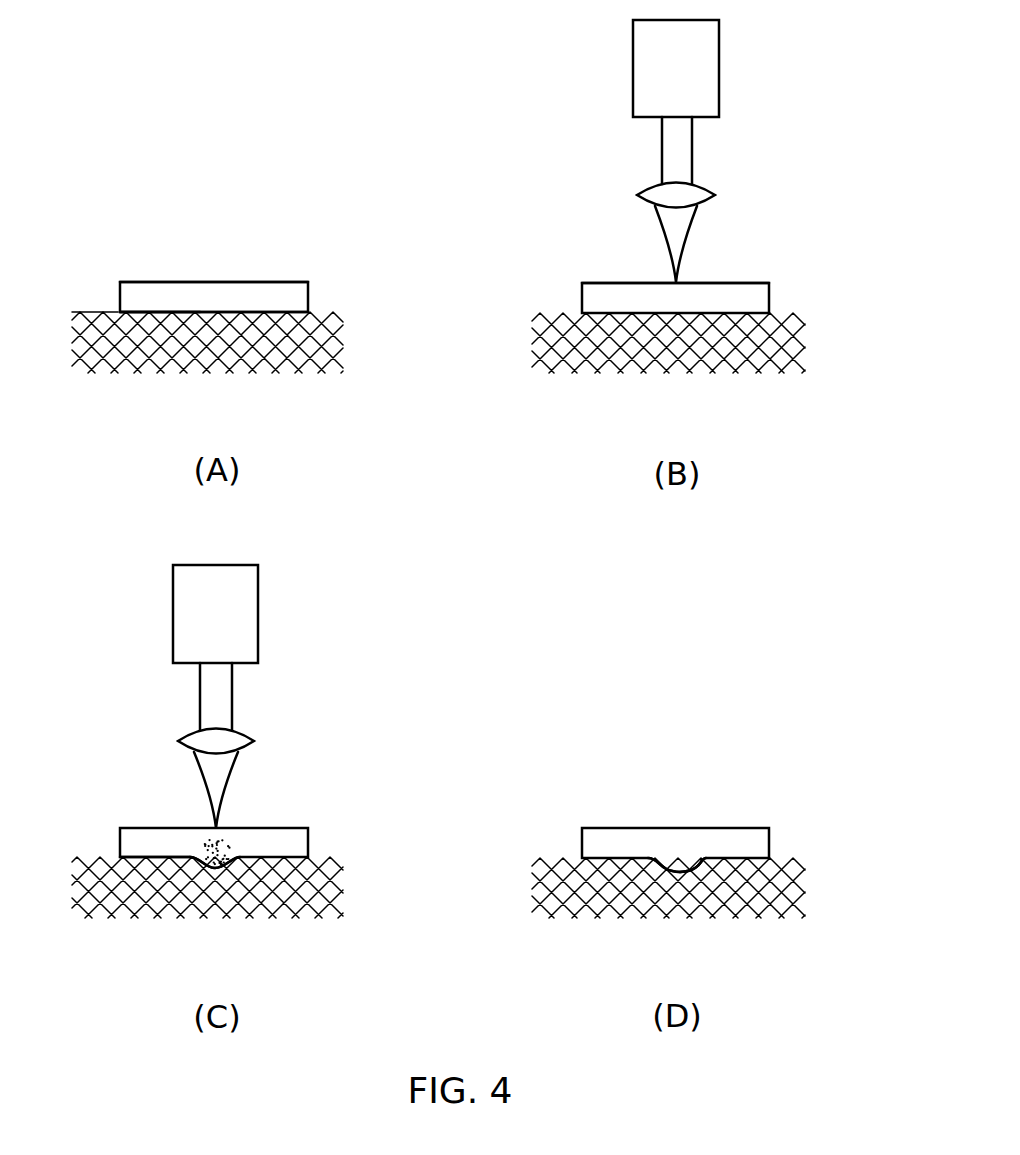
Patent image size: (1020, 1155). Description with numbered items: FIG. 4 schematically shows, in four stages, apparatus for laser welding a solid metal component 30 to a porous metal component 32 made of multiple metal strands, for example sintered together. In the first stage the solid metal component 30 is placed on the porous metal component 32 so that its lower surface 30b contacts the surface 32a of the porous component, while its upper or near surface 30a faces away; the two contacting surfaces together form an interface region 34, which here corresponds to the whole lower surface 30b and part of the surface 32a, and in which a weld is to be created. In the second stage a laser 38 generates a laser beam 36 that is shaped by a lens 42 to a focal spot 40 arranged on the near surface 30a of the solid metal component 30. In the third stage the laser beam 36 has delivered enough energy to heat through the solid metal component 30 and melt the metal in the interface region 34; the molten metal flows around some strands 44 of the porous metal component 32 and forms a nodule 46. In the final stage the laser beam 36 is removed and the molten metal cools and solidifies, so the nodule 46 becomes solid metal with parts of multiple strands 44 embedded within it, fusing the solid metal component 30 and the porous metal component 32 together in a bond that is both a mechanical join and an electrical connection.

The solid metal component 30 is at (308, 292).
The upper or near surface 30a is at (293, 282).
The lower surface 30b is at (133, 316).
The porous metal component 32 is at (325, 363).
The surface of the porous metal component 32a is at (102, 312).
The interface region 34 is at (308, 312).
The laser beam 36 is at (693, 156).
The laser 38 is at (660, 83).
The focal spot 40 is at (680, 280).
The lens 42 is at (715, 194).
The strands 44 is at (223, 867).
The nodule 46 is at (202, 865).